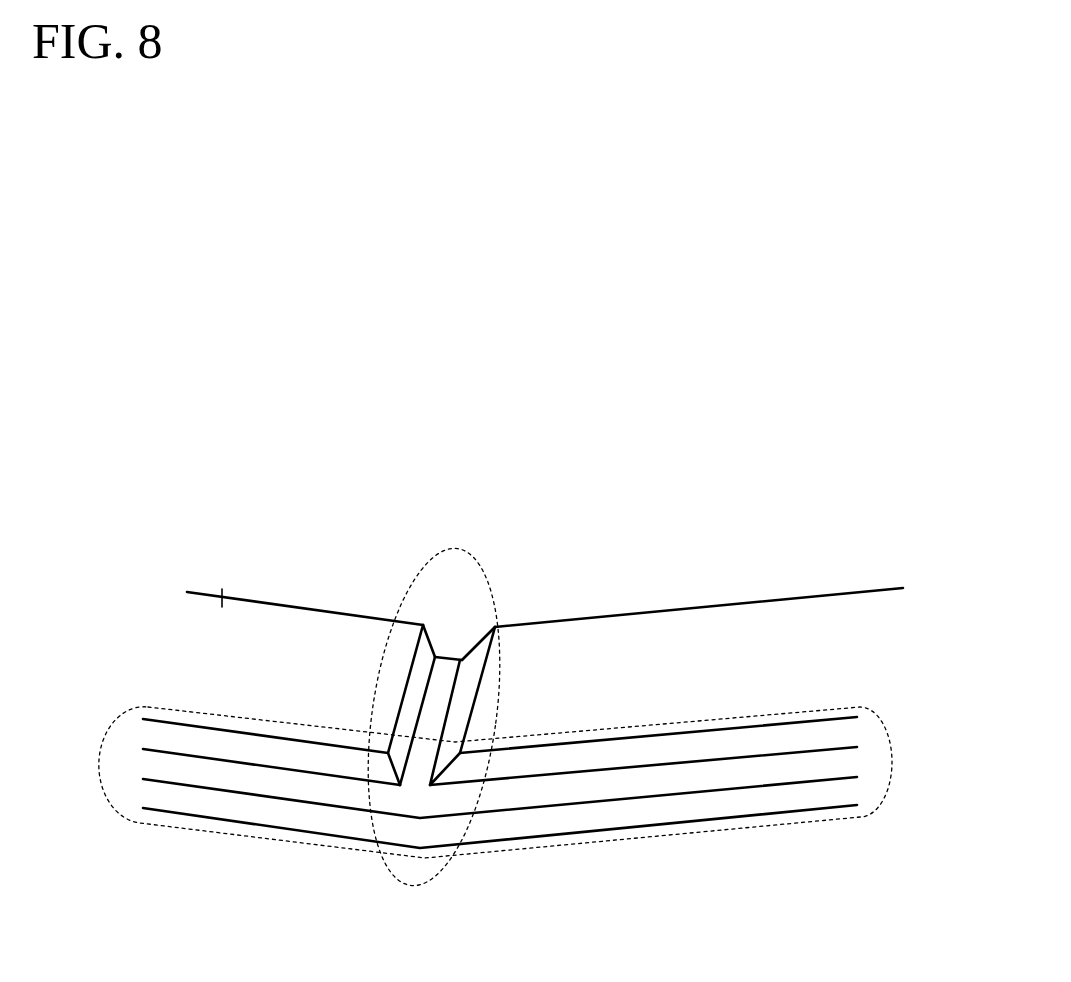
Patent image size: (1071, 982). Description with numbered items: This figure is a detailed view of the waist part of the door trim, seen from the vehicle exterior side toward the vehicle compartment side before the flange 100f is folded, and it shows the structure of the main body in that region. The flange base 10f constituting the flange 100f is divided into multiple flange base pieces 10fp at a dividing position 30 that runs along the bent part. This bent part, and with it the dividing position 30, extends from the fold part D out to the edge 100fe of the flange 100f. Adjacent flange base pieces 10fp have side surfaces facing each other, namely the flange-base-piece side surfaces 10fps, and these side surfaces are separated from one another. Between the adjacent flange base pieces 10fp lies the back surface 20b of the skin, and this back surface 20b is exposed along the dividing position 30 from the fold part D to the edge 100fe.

The flange base 10f is at (530, 579).
The flange base pieces 10fp is at (327, 667).
The flange-base-piece side surfaces 10fps is at (465, 698).
The dividing position 30 is at (476, 550).
The edge 100fe is at (452, 657).
The back surface 20b is at (508, 700).
The flange 100f is at (543, 672).
The fold part D is at (773, 710).